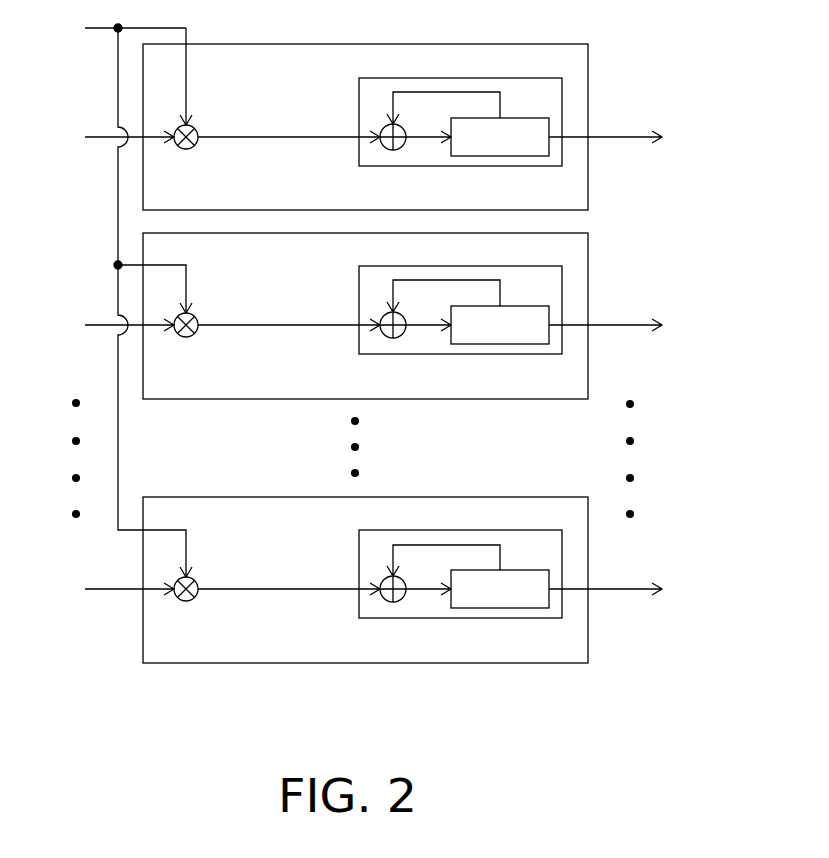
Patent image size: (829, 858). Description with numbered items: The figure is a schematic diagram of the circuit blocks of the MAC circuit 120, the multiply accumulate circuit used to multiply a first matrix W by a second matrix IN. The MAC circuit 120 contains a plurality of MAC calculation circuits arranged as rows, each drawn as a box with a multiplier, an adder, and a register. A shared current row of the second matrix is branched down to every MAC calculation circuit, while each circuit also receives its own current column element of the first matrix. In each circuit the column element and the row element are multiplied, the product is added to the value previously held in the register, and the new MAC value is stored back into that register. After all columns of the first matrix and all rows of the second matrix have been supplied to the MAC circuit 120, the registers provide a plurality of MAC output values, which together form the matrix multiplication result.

The MAC circuit 120 is at (385, 389).